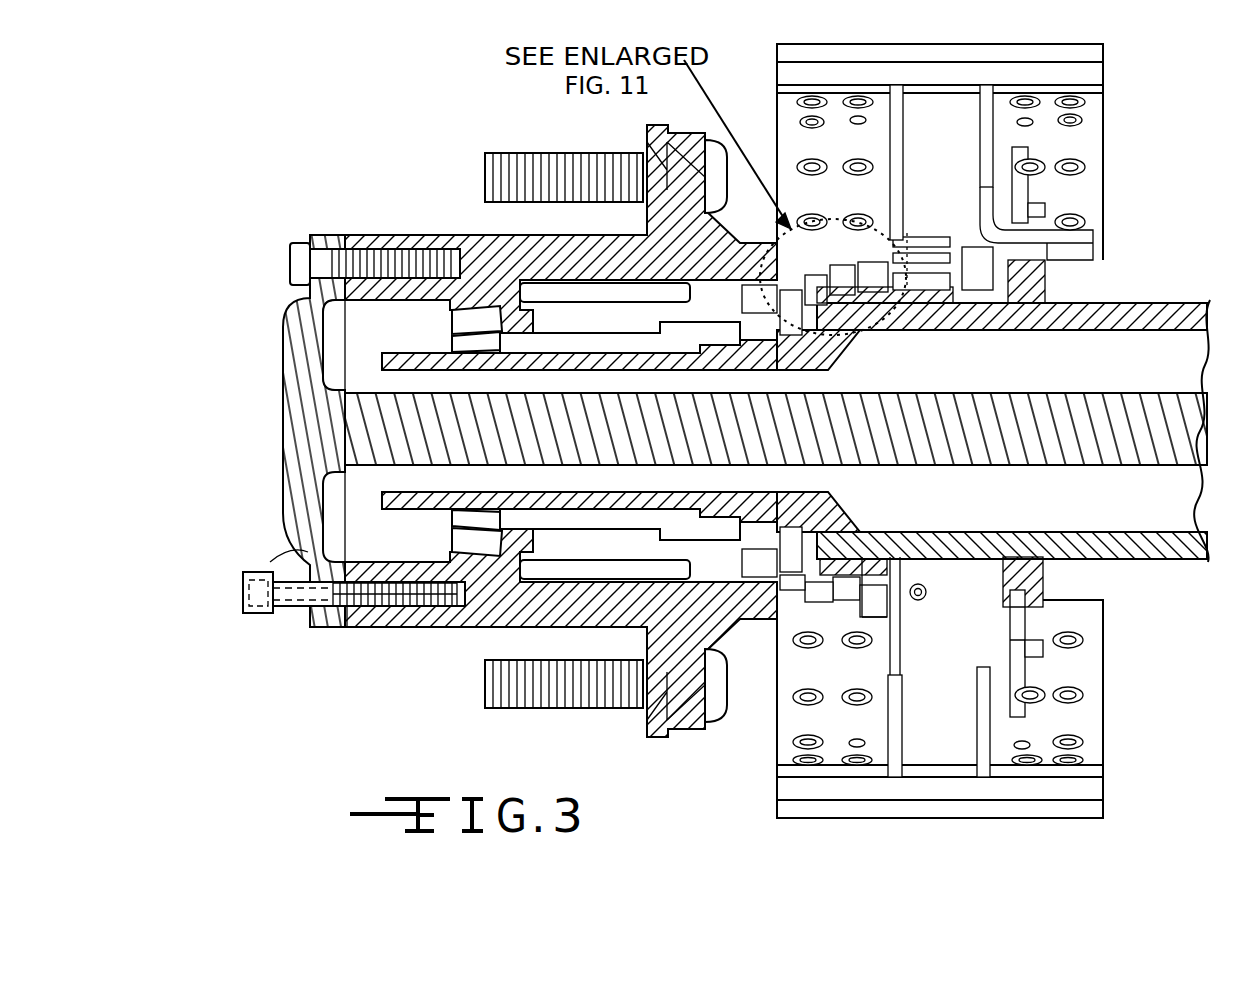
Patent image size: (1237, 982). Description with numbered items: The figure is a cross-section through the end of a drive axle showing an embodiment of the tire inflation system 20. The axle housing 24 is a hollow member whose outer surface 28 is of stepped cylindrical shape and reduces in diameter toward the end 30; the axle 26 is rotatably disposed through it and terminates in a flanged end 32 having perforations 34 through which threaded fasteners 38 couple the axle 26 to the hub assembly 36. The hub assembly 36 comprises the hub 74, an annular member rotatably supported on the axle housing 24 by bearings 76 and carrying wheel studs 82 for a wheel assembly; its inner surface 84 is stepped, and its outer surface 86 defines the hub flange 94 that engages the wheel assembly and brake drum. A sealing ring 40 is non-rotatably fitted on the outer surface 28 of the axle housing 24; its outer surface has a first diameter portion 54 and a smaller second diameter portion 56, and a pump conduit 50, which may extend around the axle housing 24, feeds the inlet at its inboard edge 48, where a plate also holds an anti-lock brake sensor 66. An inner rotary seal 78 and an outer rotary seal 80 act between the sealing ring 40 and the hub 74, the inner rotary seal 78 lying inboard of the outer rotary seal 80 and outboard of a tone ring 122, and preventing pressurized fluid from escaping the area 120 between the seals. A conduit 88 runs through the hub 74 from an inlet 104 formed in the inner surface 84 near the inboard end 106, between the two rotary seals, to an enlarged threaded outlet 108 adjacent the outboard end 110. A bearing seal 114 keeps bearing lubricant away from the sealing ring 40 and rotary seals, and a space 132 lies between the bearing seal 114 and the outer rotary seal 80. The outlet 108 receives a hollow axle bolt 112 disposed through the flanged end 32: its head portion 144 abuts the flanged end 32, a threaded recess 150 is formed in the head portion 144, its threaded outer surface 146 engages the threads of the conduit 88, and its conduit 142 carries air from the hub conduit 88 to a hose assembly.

The tire inflation system 20 is at (268, 252).
The axle housing 24 is at (1178, 300).
The axle 26 is at (1173, 405).
The outer surface 28 is at (1115, 300).
The end 30 is at (388, 356).
The flanged end 32 is at (305, 565).
The perforations 34 is at (305, 240).
The hub assembly 36 is at (430, 233).
The threaded fasteners 38 is at (290, 271).
The sealing ring 40 is at (933, 320).
The inboard edge 48 is at (380, 612).
The pump conduit 50 is at (928, 593).
The first diameter portion 54 is at (893, 322).
The second diameter portion 56 is at (838, 335).
The anti-lock brake sensor 66 is at (987, 262).
The hub 74 is at (365, 236).
The bearings 76 is at (690, 320).
The inner rotary seal 78 is at (870, 597).
The outer rotary seal 80 is at (758, 627).
The wheel studs 82 is at (545, 152).
The inner surface 84 is at (397, 556).
The outer surface 86 is at (425, 627).
The conduit 88 is at (515, 597).
The hub flange 94 is at (645, 210).
The inlet 104 is at (843, 597).
The inboard end 106 is at (880, 600).
The outlet 108 is at (455, 610).
The outboard end 110 is at (332, 625).
The axle bolt 112 is at (245, 620).
The bearing seal 114 is at (793, 547).
The area 120 is at (900, 578).
The tone ring 122 is at (862, 615).
The space 132 is at (847, 597).
The conduit 142 is at (292, 612).
The head portion 144 is at (252, 628).
The outer surface 146 is at (397, 617).
The recess 150 is at (242, 592).